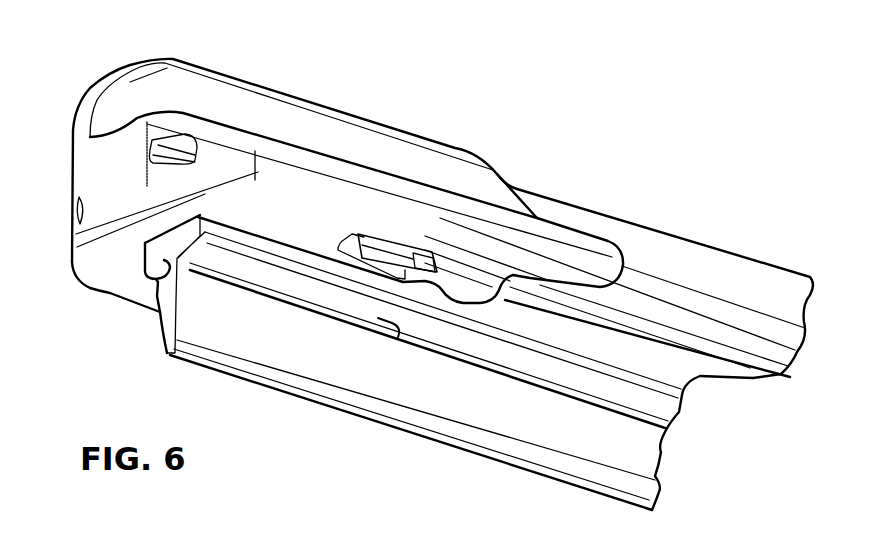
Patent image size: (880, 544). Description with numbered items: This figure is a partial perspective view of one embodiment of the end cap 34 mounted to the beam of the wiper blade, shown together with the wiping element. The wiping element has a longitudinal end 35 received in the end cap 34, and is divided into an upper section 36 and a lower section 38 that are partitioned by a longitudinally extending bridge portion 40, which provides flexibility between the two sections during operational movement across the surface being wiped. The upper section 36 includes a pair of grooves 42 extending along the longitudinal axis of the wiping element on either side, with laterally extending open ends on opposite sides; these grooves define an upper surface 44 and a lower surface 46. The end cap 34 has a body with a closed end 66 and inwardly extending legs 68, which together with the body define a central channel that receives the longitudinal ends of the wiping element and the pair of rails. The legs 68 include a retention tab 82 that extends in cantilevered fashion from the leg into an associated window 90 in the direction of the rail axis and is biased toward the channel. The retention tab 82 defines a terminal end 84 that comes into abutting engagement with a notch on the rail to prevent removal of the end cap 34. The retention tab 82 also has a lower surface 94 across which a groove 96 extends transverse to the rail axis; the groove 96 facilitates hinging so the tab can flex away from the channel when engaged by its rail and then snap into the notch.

The end cap 34 is at (375, 116).
The longitudinal end 35 is at (160, 252).
The upper section 36 is at (247, 228).
The lower section 38 is at (362, 415).
The bridge portion 40 is at (160, 280).
The grooves 42 is at (223, 283).
The upper surface 44 is at (590, 343).
The lower surface 46 is at (388, 320).
The closed end 66 is at (83, 177).
The inwardly extending legs 68 is at (220, 183).
The retention tab 82 is at (408, 240).
The terminal end 84 is at (367, 237).
The window 90 is at (352, 253).
The lower surface 94 is at (383, 243).
The groove 96 is at (421, 240).